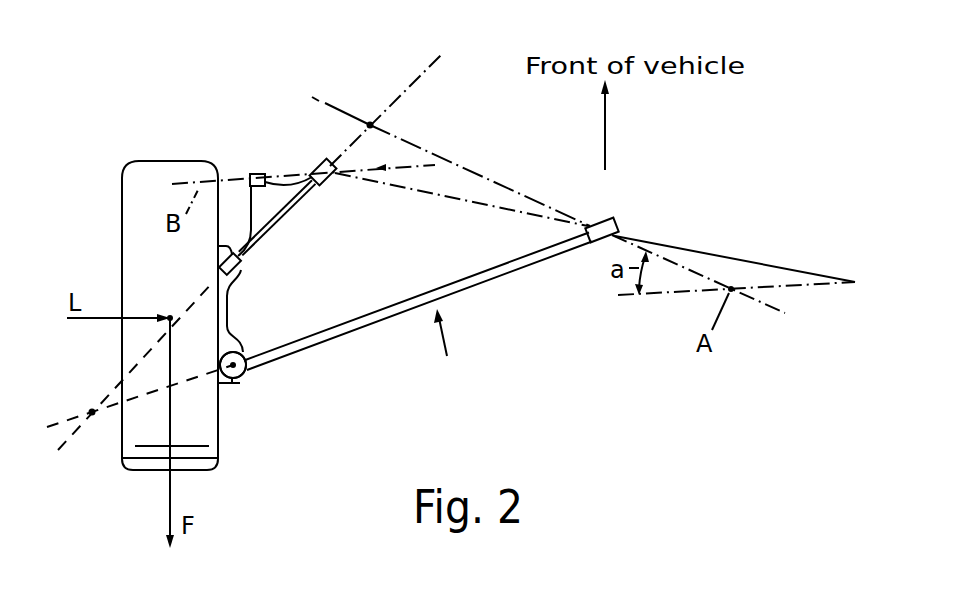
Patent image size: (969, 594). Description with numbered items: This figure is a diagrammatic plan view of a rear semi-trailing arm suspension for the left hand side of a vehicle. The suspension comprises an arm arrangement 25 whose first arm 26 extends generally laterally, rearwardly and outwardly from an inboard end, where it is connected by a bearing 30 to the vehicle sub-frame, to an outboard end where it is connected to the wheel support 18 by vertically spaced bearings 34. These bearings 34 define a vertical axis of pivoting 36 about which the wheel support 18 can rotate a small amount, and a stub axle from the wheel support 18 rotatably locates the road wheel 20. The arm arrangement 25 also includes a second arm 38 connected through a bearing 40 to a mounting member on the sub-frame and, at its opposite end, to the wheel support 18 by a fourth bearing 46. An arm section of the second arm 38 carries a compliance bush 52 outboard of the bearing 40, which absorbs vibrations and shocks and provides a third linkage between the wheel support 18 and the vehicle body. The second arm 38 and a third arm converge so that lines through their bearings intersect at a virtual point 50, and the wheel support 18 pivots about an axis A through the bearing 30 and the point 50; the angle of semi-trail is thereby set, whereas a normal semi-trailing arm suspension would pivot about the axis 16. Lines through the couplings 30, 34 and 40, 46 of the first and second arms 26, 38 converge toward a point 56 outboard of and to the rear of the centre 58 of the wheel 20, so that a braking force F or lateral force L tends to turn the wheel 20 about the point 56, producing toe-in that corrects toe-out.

The axis 16 is at (747, 259).
The wheel support 18 is at (222, 316).
The road wheel 20 is at (205, 432).
The arm arrangement 25 is at (447, 349).
The first arm 26 is at (512, 272).
The bearing 30 is at (614, 222).
The vertically spaced bearings 34 is at (231, 383).
The vertical axis of pivoting 36 is at (243, 373).
The second arm 38 is at (298, 206).
The bearing 40 is at (319, 164).
The fourth bearing 46 is at (242, 260).
The virtual point 50 is at (370, 120).
The compliance bush 52 is at (257, 173).
The point 56 is at (92, 410).
The centre of the wheel 58 is at (170, 316).